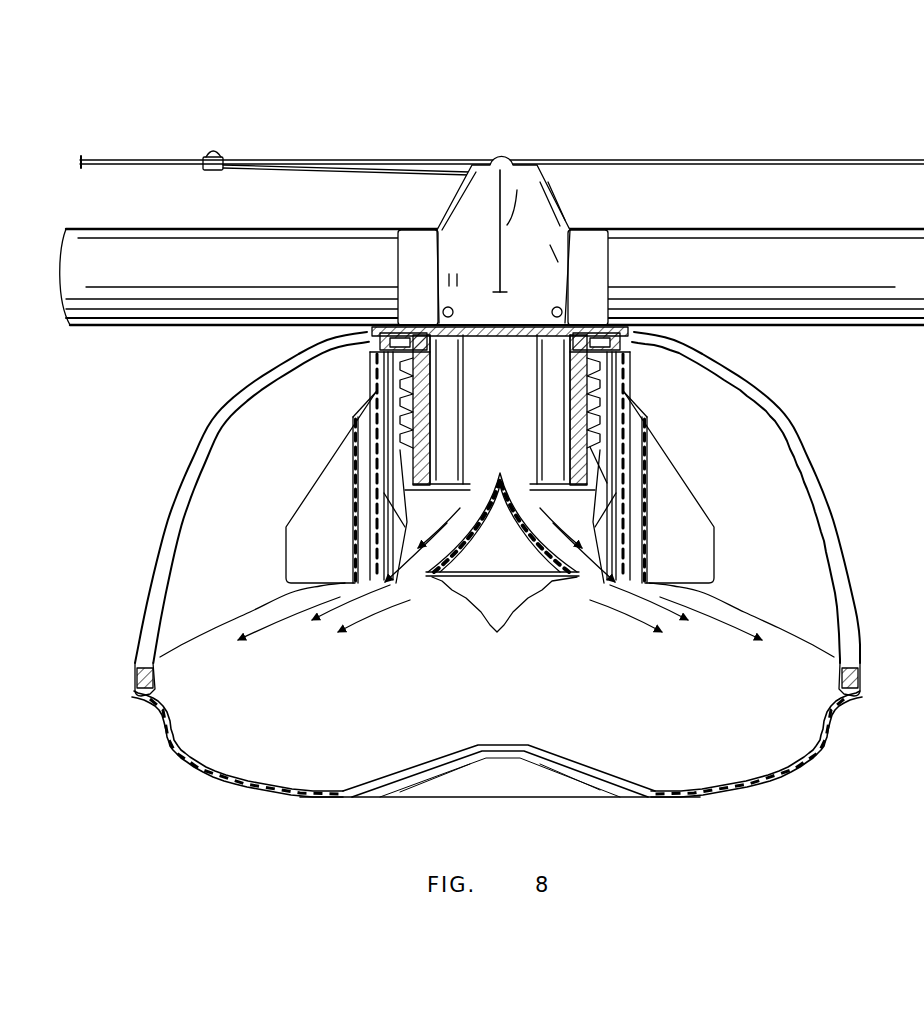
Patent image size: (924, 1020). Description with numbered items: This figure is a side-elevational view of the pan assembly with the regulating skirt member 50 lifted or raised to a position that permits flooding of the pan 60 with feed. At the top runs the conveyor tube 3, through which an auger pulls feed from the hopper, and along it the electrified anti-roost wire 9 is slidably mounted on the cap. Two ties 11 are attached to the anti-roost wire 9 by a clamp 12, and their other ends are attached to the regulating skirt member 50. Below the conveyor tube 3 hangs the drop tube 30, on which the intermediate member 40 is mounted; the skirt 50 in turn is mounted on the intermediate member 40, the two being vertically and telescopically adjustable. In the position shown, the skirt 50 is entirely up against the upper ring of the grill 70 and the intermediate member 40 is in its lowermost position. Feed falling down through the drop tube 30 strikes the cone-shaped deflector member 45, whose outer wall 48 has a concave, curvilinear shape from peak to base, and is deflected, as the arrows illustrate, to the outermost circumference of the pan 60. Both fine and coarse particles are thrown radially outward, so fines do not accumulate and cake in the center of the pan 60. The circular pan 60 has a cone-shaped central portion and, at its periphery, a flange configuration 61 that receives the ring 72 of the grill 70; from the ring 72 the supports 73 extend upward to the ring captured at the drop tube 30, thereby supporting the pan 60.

The conveyor tube 3 is at (727, 257).
The anti-roost wire 9 is at (760, 160).
The ties 11 is at (360, 172).
The clamp 12 is at (222, 157).
The drop tube 30 is at (417, 382).
The intermediate member 40 is at (592, 487).
The cone-shaped deflector member 45 is at (474, 546).
The outer wall 48 is at (500, 501).
The regulating skirt member 50 is at (655, 396).
The pan 60 is at (838, 728).
The flange configuration 61 is at (858, 676).
The grill 70 is at (850, 545).
The ring 72 is at (137, 682).
The supports 73 is at (742, 392).